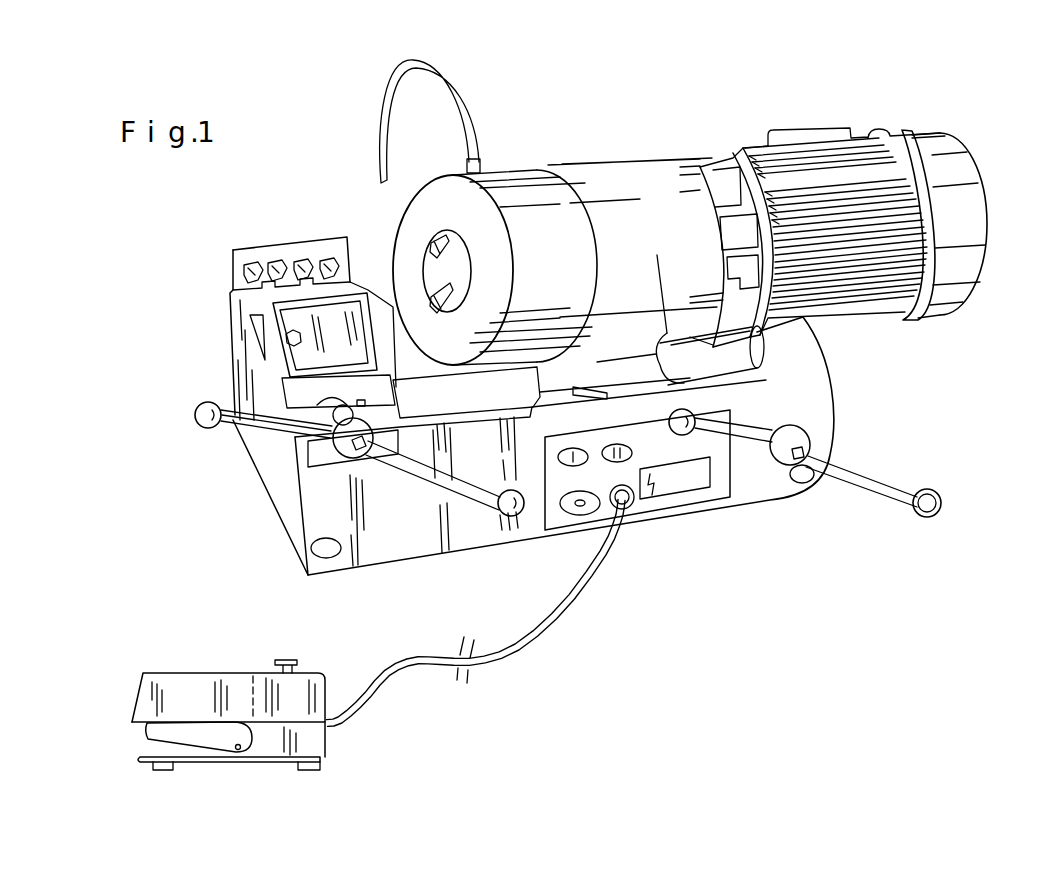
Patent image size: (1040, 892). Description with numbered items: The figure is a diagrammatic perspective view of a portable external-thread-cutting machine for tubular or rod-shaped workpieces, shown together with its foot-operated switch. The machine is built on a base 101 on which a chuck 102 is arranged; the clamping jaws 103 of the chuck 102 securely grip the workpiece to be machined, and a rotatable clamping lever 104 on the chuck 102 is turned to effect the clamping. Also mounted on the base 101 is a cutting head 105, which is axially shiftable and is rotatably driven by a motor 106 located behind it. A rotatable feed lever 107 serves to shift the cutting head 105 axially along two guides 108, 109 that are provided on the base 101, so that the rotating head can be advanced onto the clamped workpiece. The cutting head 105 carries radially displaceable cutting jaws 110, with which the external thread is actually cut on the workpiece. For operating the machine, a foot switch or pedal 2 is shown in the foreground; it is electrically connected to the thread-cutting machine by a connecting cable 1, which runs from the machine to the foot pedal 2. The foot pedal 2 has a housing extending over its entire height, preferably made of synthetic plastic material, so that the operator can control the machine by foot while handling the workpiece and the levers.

The connecting cable 1 is at (560, 607).
The foot pedal 2 is at (115, 701).
The base 101 is at (468, 538).
The chuck 102 is at (233, 312).
The clamping jaws 103 is at (328, 263).
The clamping lever 104 is at (262, 424).
The cutting head 105 is at (527, 178).
The motor 106 is at (805, 177).
The feed lever 107 is at (878, 483).
The guide 108 is at (757, 350).
The guide 109 is at (382, 290).
The cutting jaws 110 is at (450, 290).